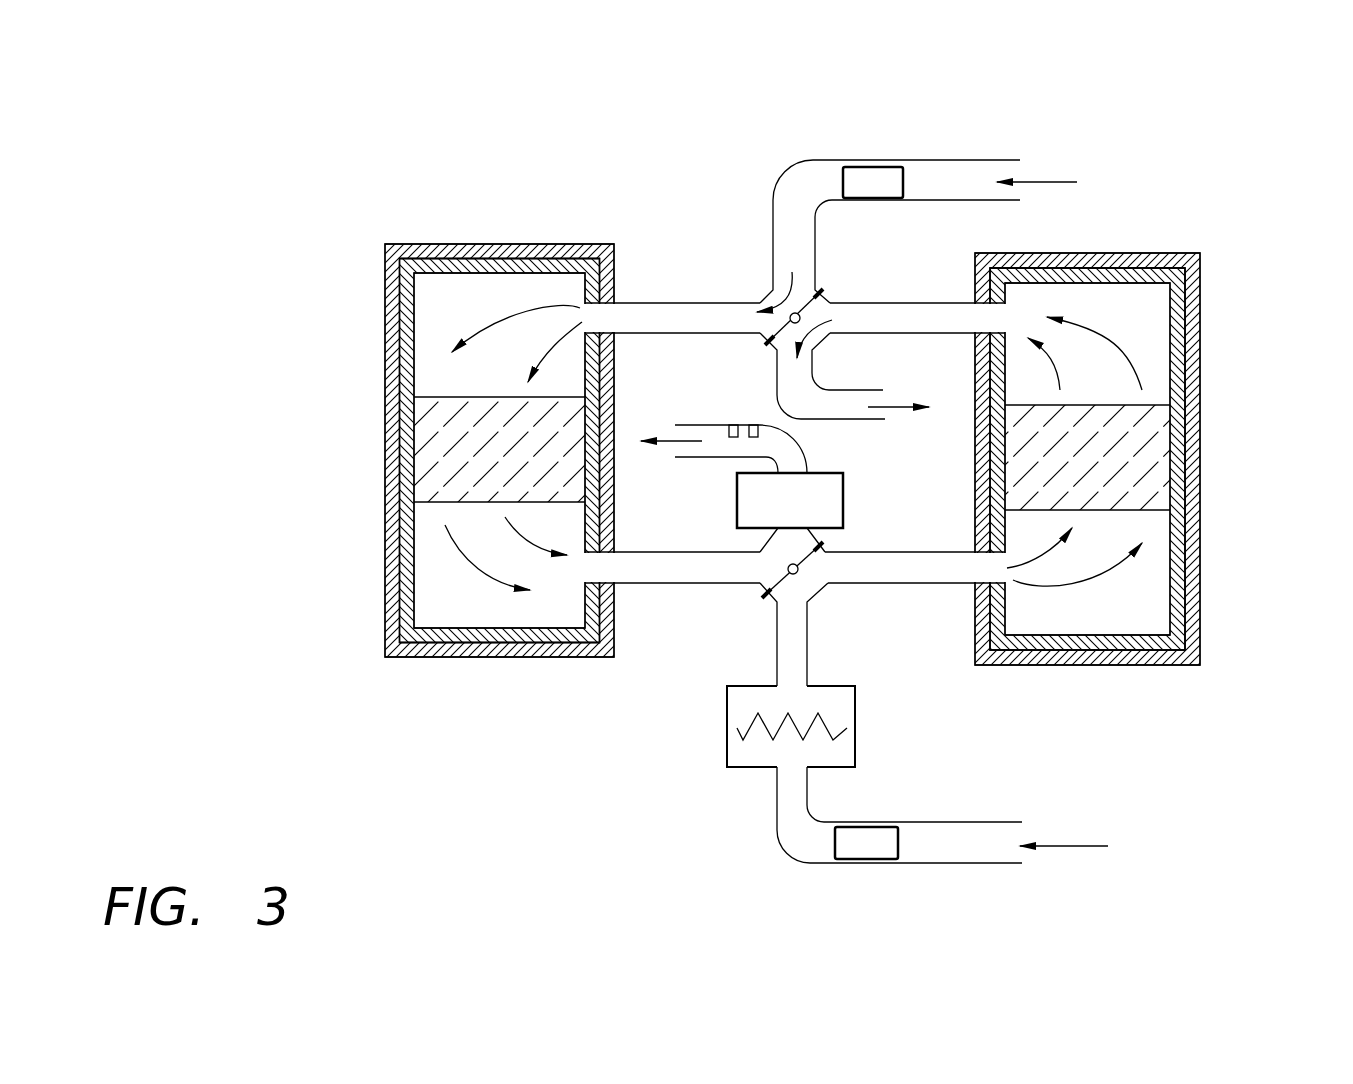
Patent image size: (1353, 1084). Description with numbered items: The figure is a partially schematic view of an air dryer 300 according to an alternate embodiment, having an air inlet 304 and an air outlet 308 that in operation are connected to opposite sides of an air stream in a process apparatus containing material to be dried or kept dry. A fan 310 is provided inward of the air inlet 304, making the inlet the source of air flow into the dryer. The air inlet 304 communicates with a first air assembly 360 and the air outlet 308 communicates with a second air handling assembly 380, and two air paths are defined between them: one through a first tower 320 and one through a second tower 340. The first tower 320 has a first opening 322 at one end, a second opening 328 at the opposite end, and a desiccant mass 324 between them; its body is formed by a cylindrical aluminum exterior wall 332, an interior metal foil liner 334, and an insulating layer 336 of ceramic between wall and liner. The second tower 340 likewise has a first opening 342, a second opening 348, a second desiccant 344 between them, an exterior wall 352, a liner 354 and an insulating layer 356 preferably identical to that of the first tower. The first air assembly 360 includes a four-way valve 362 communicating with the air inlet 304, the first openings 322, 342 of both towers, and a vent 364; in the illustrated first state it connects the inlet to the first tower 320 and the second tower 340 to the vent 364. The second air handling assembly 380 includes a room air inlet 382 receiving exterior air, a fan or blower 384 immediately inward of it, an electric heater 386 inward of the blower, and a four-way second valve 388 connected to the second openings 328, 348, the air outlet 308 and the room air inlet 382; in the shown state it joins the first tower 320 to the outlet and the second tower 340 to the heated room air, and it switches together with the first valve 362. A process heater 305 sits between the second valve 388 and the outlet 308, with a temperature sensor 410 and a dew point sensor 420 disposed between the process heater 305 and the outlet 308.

The air dryer 300 is at (1300, 93).
The air inlet 304 is at (1013, 172).
The process heater 305 is at (737, 500).
The air outlet 308 is at (675, 450).
The fan 310 is at (863, 167).
The first tower 320 is at (363, 337).
The first opening 322 is at (582, 305).
The desiccant mass 324 is at (445, 460).
The second opening 328 is at (580, 573).
The exterior wall 332 is at (387, 542).
The liner 334 is at (405, 610).
The insulating layer 336 is at (400, 572).
The second tower 340 is at (1212, 382).
The first opening 342 is at (1000, 318).
The second desiccant 344 is at (1133, 427).
The second opening 348 is at (1003, 580).
The exterior wall 352 is at (1203, 583).
The liner 354 is at (1208, 317).
The insulating layer 356 is at (1203, 503).
The first air assembly 360 is at (753, 280).
The four-way valve 362 is at (827, 300).
The vent 364 is at (885, 419).
The second air handling assembly 380 is at (693, 640).
The room air inlet 382 is at (1027, 863).
The fan or blower 384 is at (868, 860).
The heater 386 is at (846, 733).
The second valve 388 is at (825, 543).
The temperature sensor 410 is at (755, 425).
The dew point sensor 420 is at (731, 425).